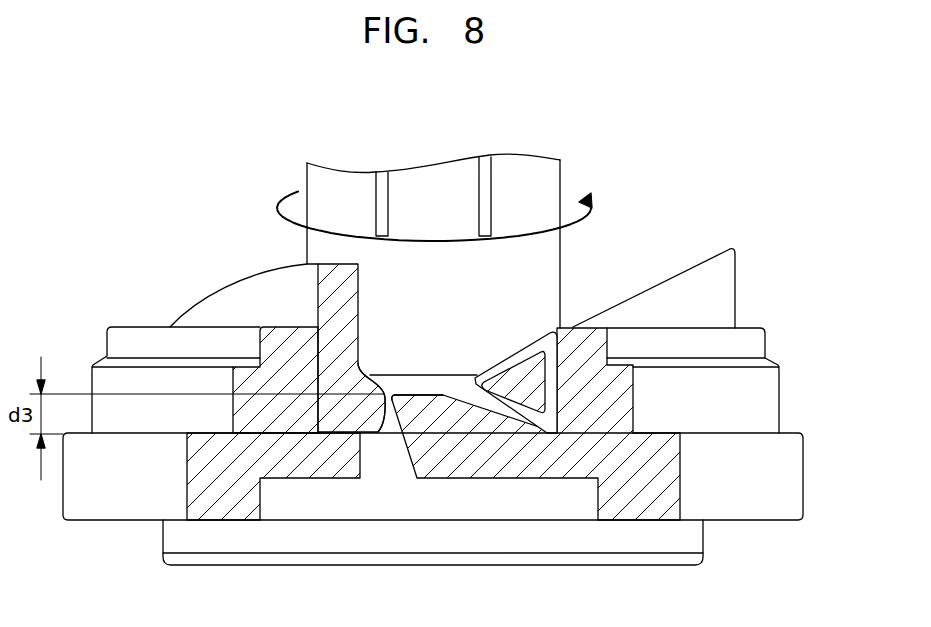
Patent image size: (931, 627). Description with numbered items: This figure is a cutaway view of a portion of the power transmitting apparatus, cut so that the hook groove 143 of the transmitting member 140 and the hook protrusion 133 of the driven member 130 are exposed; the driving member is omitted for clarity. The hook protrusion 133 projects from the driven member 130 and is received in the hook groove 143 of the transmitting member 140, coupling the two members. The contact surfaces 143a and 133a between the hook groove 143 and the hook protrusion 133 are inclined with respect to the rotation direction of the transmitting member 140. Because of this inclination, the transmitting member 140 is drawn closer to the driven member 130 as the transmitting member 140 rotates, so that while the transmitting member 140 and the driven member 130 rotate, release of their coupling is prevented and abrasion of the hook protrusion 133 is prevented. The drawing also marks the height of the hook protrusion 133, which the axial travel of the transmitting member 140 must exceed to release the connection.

The driven member 130 is at (785, 398).
The hook protrusion 133 is at (468, 397).
The contact surface 133a is at (392, 398).
The transmitting member 140 is at (676, 254).
The hook groove 143 is at (412, 386).
The contact surface 143a is at (372, 400).